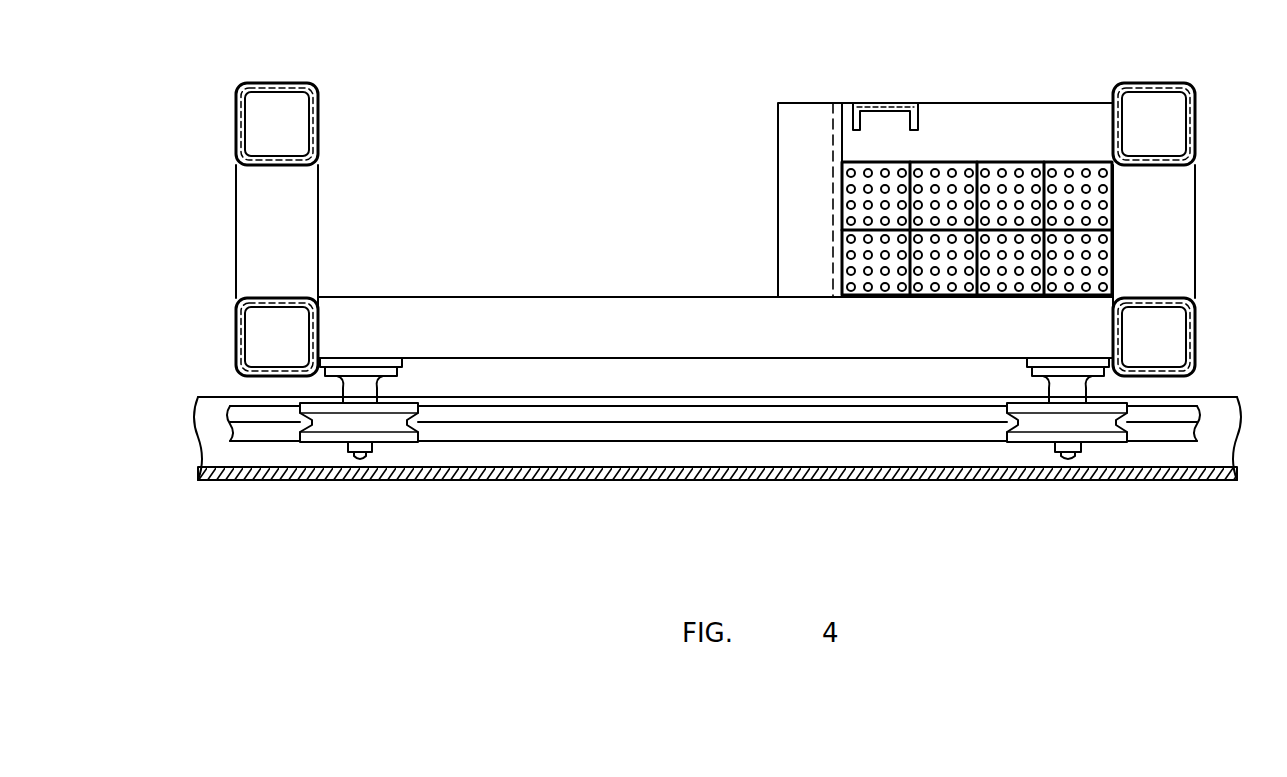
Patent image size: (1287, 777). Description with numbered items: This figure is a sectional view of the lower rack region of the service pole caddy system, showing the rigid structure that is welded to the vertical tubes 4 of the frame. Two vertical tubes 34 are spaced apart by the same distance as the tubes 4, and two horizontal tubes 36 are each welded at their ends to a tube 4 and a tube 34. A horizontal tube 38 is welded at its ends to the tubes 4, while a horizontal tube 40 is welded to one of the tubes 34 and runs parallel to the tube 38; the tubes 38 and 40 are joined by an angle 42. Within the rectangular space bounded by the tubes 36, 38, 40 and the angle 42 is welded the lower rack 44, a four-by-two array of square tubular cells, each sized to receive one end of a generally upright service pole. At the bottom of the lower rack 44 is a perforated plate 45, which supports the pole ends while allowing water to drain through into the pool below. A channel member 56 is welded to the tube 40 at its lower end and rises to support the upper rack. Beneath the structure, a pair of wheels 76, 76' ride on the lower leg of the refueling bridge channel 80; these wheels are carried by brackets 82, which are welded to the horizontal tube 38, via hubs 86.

The vertical tube 4 is at (237, 332).
The vertical tube 34 is at (284, 83).
The horizontal tube 36 is at (285, 245).
The horizontal tube 38 is at (600, 340).
The horizontal tube 40 is at (1067, 140).
The angle 42 is at (823, 183).
The lower rack 44 is at (948, 160).
The perforated plate 45 is at (945, 278).
The channel member 56 is at (908, 103).
The wheel 76 is at (809, 471).
The wheel 76' is at (362, 463).
The refueling bridge channel 80 is at (855, 452).
The bracket 82 is at (350, 357).
The hub 86 is at (370, 390).